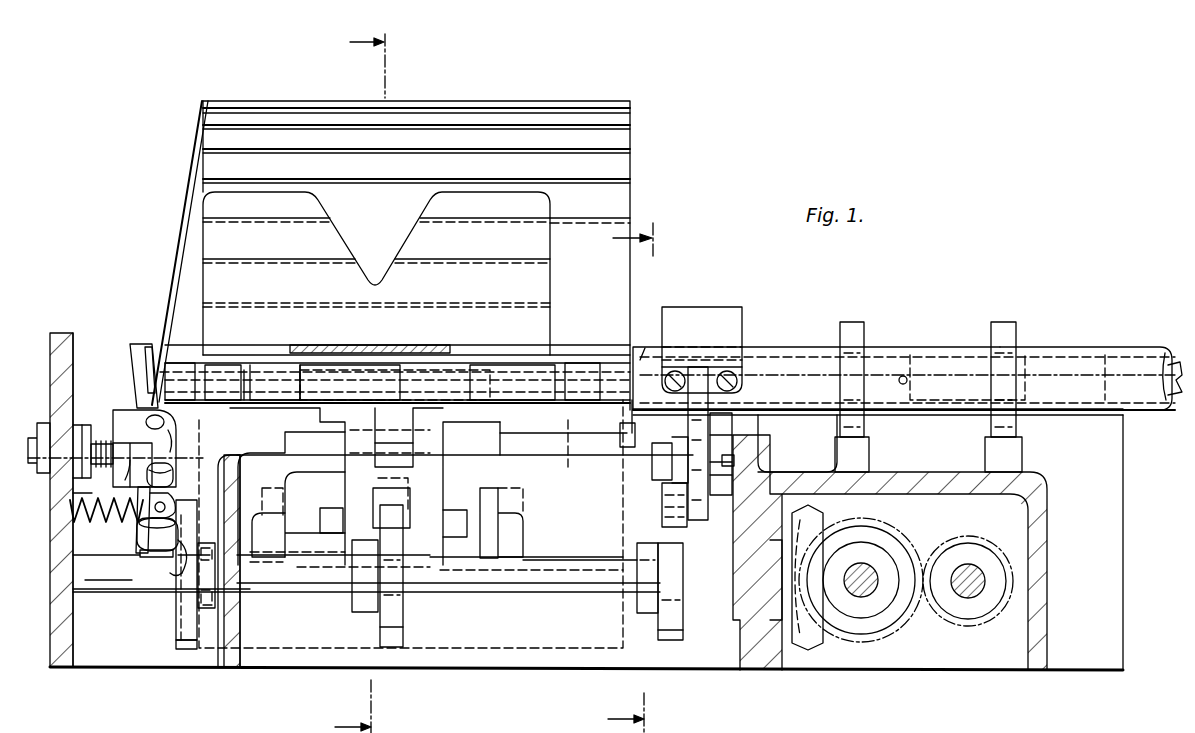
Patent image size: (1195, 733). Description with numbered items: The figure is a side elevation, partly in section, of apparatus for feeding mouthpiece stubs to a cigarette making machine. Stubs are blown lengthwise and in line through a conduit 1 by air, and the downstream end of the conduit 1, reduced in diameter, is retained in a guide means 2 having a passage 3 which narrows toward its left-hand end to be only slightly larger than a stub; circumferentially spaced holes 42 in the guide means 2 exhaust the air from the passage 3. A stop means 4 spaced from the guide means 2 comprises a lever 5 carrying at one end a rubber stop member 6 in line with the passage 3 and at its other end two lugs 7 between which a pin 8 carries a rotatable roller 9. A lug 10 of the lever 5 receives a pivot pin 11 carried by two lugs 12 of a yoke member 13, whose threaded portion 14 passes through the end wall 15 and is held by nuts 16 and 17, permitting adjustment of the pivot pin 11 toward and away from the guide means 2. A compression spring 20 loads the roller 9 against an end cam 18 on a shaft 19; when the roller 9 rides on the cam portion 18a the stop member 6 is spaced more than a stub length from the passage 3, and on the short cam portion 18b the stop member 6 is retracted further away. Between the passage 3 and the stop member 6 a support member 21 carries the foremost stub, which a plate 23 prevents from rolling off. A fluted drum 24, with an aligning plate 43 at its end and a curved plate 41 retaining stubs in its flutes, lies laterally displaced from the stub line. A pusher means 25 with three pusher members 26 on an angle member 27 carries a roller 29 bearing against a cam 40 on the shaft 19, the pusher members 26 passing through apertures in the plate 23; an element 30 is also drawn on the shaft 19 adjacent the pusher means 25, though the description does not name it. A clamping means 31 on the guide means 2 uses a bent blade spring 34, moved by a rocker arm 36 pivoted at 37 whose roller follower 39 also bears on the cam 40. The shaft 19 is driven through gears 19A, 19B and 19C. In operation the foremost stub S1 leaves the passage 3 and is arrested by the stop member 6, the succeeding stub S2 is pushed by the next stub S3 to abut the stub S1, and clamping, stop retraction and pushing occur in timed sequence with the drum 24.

The conduit 1 is at (1068, 350).
The guide means 2 is at (808, 347).
The passage 3 is at (752, 358).
The stop means 4 is at (131, 346).
The lever 5 is at (142, 530).
The stop member 6 is at (149, 347).
The lugs 7 is at (150, 550).
The pin 8 is at (166, 503).
The roller 9 is at (157, 540).
The lug 10 is at (176, 432).
The pivot pin 11 is at (146, 420).
The lugs 12 is at (173, 470).
The yoke member 13 is at (130, 468).
The threaded portion 14 is at (91, 425).
The end wall 15 is at (50, 577).
The nut 16 is at (46, 430).
The nut 17 is at (98, 443).
The end cam 18 is at (176, 628).
The cam portion 18a is at (176, 645).
The short cam portion 18b is at (183, 566).
The shaft 19 is at (316, 595).
The gear 19A is at (800, 650).
The gear 19B is at (890, 640).
The gear 19C is at (978, 615).
The compression spring 20 is at (70, 533).
The support member 21 is at (566, 445).
The plate 23 is at (218, 365).
The fluted drum 24 is at (490, 135).
The pusher means 25 is at (495, 472).
The pusher members 26 is at (330, 365).
The angle member 27 is at (258, 365).
The roller 29 is at (400, 497).
The disc 30 is at (403, 622).
The clamping means 31 is at (760, 296).
The bent blade spring 34 is at (702, 318).
The rocker arm 36 is at (714, 423).
The pivot 37 is at (725, 462).
The roller follower 39 is at (664, 502).
The cam 40 is at (683, 632).
The curved plate 41 is at (545, 210).
The holes 42 is at (903, 376).
The aligning plate 43 is at (182, 234).
The foremost stub S1 is at (180, 362).
The succeeding stub S2 is at (958, 350).
The next stub S3 is at (1110, 370).